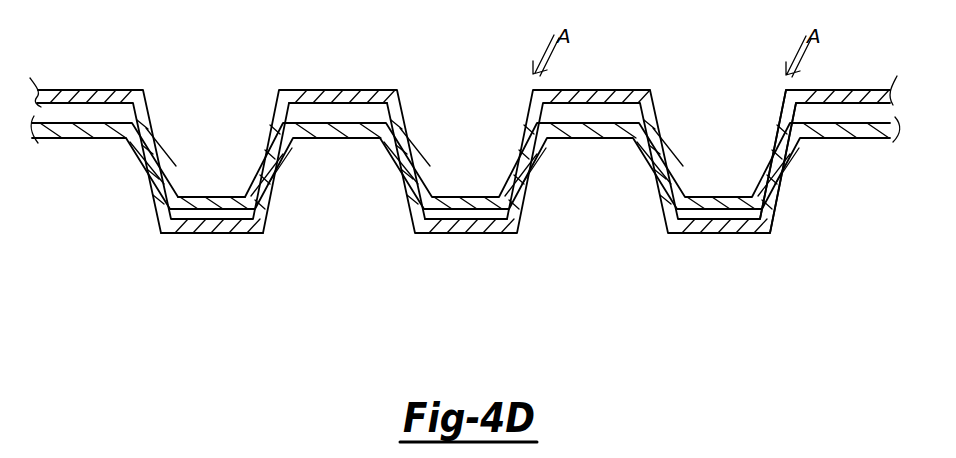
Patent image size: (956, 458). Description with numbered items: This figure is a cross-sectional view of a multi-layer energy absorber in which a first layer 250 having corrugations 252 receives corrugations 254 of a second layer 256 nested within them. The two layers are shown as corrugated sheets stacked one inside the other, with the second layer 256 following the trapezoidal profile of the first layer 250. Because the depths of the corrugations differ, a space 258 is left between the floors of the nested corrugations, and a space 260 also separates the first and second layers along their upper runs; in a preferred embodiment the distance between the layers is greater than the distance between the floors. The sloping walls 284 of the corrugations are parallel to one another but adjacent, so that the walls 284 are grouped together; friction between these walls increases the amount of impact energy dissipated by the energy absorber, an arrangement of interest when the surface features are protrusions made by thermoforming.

The first layer 250 is at (70, 139).
The corrugations 252 is at (208, 234).
The corrugations 254 is at (210, 196).
The second layer 256 is at (82, 87).
The space 258 is at (458, 214).
The space 260 is at (333, 112).
The walls 284 is at (767, 158).